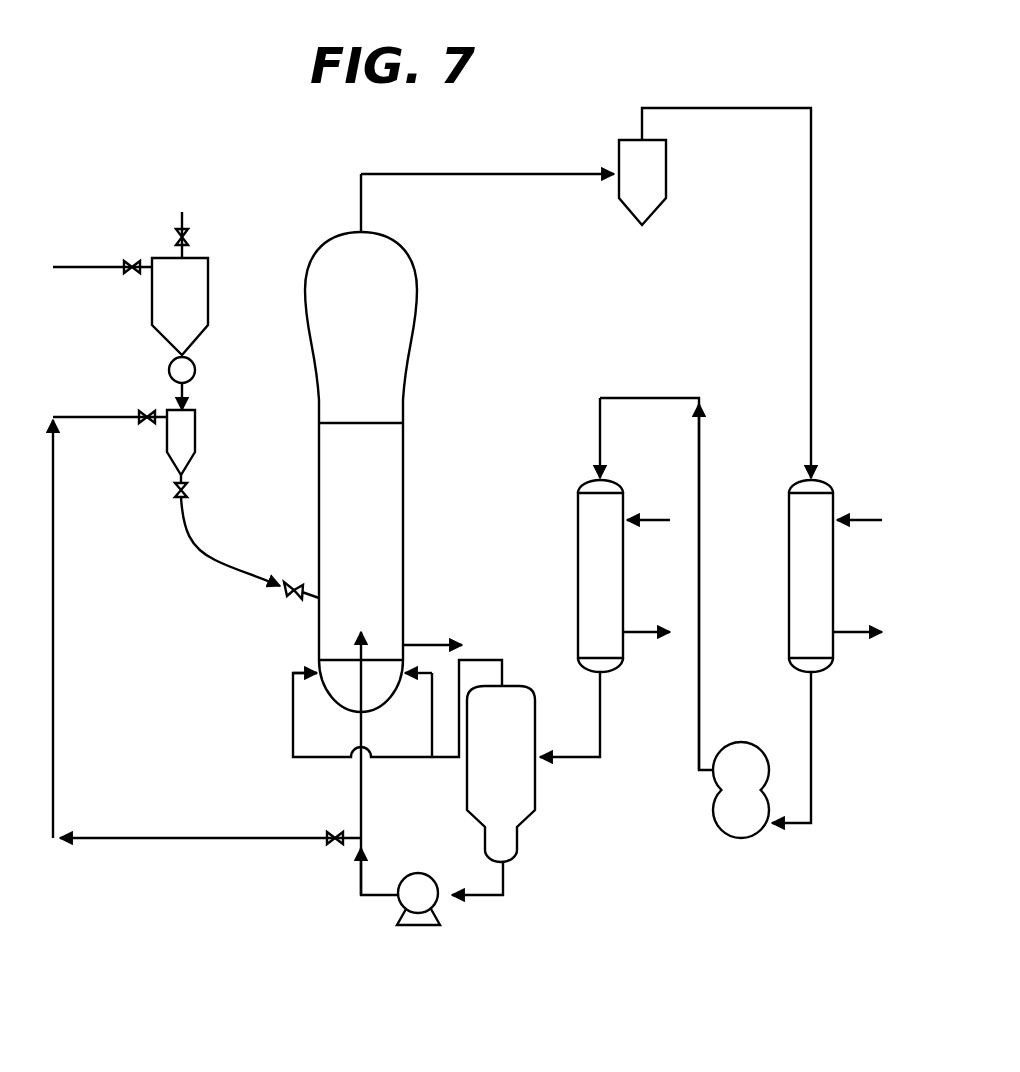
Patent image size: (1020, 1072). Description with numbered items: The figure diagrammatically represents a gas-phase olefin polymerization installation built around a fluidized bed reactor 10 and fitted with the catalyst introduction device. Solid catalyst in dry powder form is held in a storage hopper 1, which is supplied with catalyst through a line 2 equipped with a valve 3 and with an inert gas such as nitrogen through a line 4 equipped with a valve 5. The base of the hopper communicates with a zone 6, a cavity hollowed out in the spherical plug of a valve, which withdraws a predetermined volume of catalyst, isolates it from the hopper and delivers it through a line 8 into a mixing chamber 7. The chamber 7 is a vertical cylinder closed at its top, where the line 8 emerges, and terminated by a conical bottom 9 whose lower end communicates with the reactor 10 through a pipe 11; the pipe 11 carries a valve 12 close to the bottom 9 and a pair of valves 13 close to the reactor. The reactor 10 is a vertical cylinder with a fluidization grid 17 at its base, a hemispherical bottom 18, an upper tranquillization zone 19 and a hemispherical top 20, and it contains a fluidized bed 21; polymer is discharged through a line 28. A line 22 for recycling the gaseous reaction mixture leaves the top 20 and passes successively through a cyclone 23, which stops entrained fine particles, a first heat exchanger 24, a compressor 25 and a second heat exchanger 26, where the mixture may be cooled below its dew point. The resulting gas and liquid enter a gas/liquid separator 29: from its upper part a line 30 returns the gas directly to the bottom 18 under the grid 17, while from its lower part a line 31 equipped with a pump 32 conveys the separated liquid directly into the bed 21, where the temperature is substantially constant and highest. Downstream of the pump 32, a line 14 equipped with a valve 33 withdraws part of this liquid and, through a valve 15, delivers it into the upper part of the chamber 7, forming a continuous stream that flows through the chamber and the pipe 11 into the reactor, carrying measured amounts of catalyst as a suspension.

The storage hopper 1 is at (208, 300).
The line 2 is at (182, 218).
The valve 3 is at (189, 236).
The line 4 is at (78, 268).
The valve 5 is at (128, 270).
The zone 6 is at (196, 368).
The mixing chamber 7 is at (196, 437).
The line 8 is at (182, 393).
The conical bottom 9 is at (183, 462).
The gas-phase polymerization reactor 10 is at (403, 500).
The pipe 11 is at (212, 558).
The valve 12 is at (173, 491).
The pair of valves 13 is at (288, 598).
The line 14 is at (82, 417).
The valve 15 is at (147, 423).
The fluidization grid 17 is at (332, 660).
The hemispherical bottom 18 is at (378, 696).
The tranquillization zone 19 is at (412, 341).
The hemispherical top 20 is at (400, 240).
The fluidized bed 21 is at (382, 570).
The line 22 is at (527, 172).
The cyclone 23 is at (653, 200).
The first heat exchanger 24 is at (790, 567).
The compressor 25 is at (736, 858).
The second heat exchanger 26 is at (580, 570).
The line 28 is at (458, 620).
The gas/liquid separator 29 is at (523, 790).
The line 30 is at (444, 760).
The line 31 is at (362, 806).
The pump 32 is at (422, 918).
The valve 33 is at (335, 845).